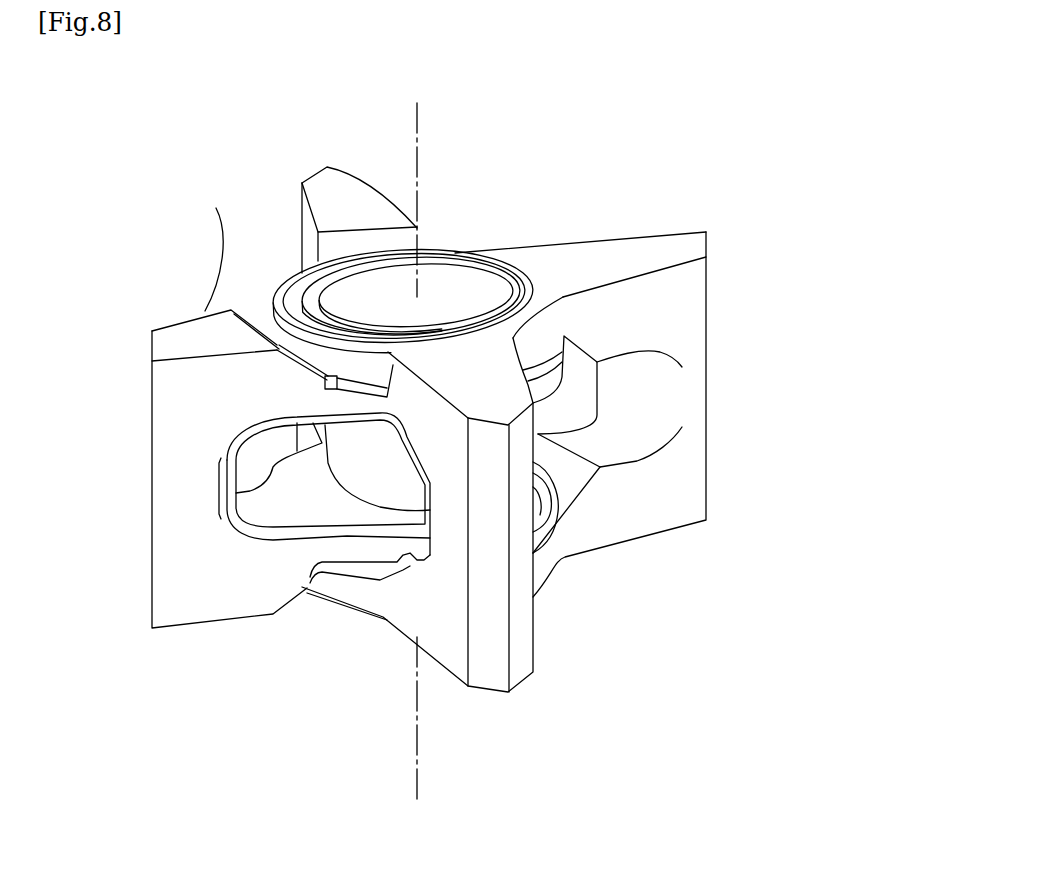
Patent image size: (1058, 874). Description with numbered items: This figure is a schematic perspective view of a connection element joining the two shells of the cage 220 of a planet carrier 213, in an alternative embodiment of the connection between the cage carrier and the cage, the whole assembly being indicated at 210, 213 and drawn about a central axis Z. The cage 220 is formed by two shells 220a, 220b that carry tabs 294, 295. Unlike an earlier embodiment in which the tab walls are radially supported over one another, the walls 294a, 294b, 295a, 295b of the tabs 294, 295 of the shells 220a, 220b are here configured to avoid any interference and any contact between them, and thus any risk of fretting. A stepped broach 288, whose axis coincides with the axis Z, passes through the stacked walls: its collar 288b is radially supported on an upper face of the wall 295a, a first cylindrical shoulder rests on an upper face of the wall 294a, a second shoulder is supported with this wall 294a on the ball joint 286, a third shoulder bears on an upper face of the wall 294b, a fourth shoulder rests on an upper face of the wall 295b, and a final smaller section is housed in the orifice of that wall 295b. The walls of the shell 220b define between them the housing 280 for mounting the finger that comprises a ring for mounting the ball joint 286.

The node assembly 210 is at (757, 152).
The planet carrier 213 is at (885, 134).
The cage 220 is at (714, 543).
The shell 220a is at (160, 642).
The shell 220b is at (513, 705).
The housing 280 is at (580, 402).
The ball joint 286 is at (367, 463).
The broach 288 is at (452, 280).
The collar 288b is at (403, 275).
The tab 294 is at (300, 212).
The wall 294a is at (307, 397).
The wall 294b is at (310, 553).
The tab 295 is at (607, 533).
The wall 295a is at (543, 268).
The wall 295b is at (382, 597).
The axis Z is at (416, 140).